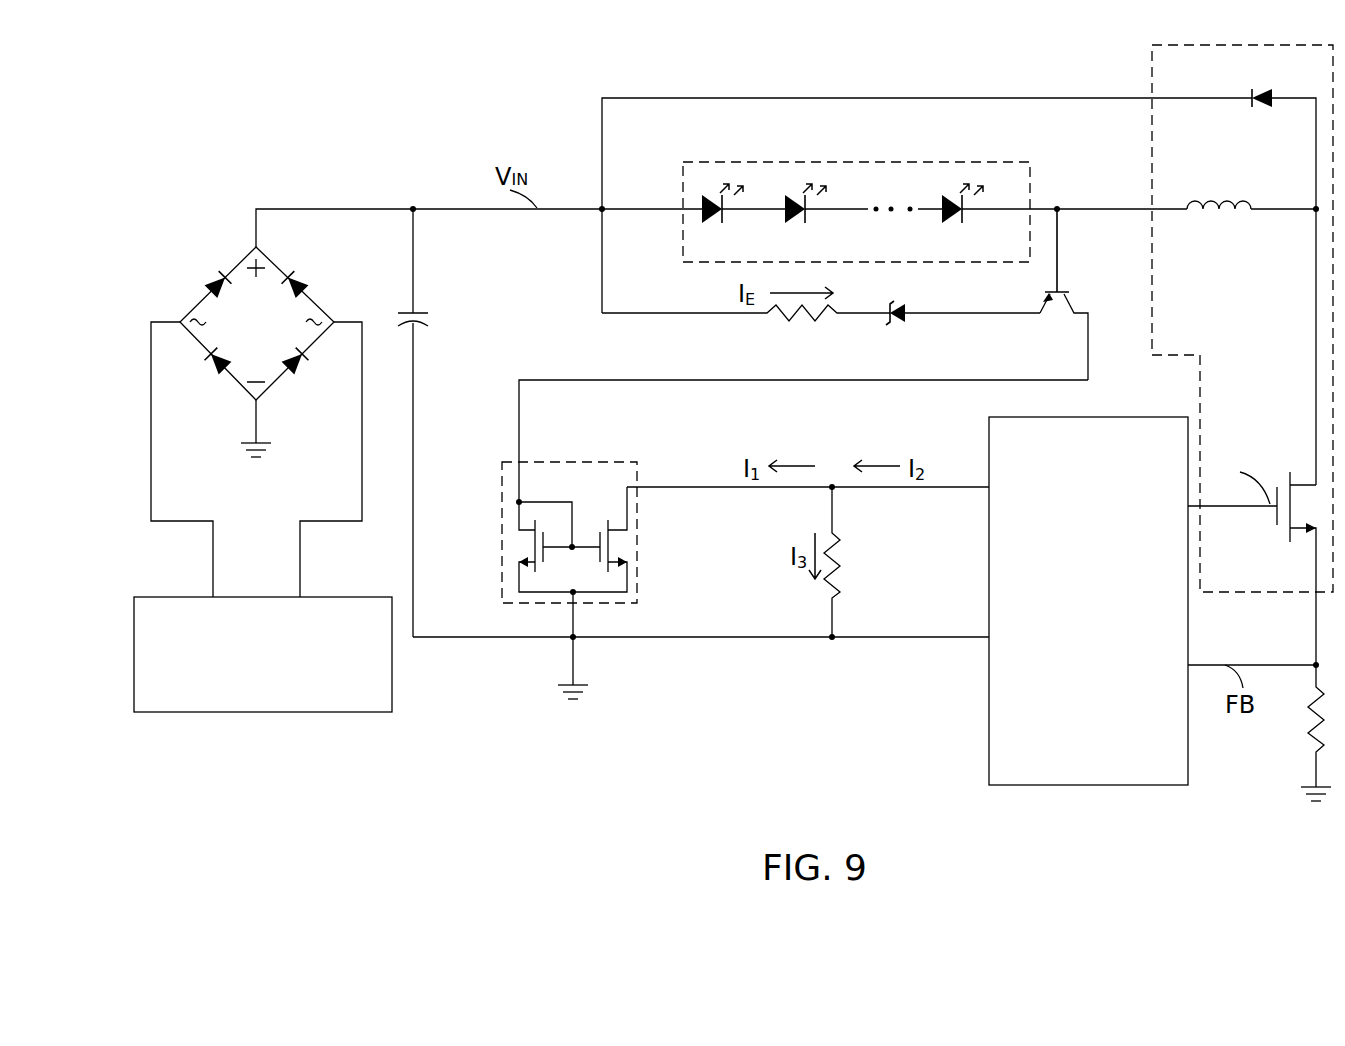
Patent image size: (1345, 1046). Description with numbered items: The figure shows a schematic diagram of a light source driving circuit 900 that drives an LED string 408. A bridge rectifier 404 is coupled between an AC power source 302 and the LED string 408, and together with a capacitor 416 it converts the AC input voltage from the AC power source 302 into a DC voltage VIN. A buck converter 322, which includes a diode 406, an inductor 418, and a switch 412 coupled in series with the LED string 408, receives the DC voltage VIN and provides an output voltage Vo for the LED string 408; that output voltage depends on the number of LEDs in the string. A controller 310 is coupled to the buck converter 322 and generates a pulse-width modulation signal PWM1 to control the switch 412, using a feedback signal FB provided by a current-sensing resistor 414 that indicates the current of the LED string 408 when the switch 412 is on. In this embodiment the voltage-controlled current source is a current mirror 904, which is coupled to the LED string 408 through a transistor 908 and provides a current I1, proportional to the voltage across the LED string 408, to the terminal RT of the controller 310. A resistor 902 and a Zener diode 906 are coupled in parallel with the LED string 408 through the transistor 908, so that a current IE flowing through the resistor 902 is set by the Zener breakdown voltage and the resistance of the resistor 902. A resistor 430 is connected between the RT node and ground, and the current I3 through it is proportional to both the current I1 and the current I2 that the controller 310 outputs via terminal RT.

The light source driving circuit 900 is at (258, 161).
The bridge rectifier 404 is at (310, 298).
The AC power source 302 is at (338, 597).
The capacitor 416 is at (416, 312).
The LED string 408 is at (893, 162).
The resistor 902 is at (778, 318).
The Zener diode 906 is at (905, 308).
The transistor 908 is at (1068, 293).
The current mirror 904 is at (637, 560).
The resistor 430 is at (838, 560).
The controller 310 is at (1100, 417).
The buck converter 322 is at (1152, 78).
The diode 406 is at (1253, 92).
The inductor 418 is at (1245, 205).
The switch 412 is at (1277, 523).
The resistor 414 is at (1310, 742).